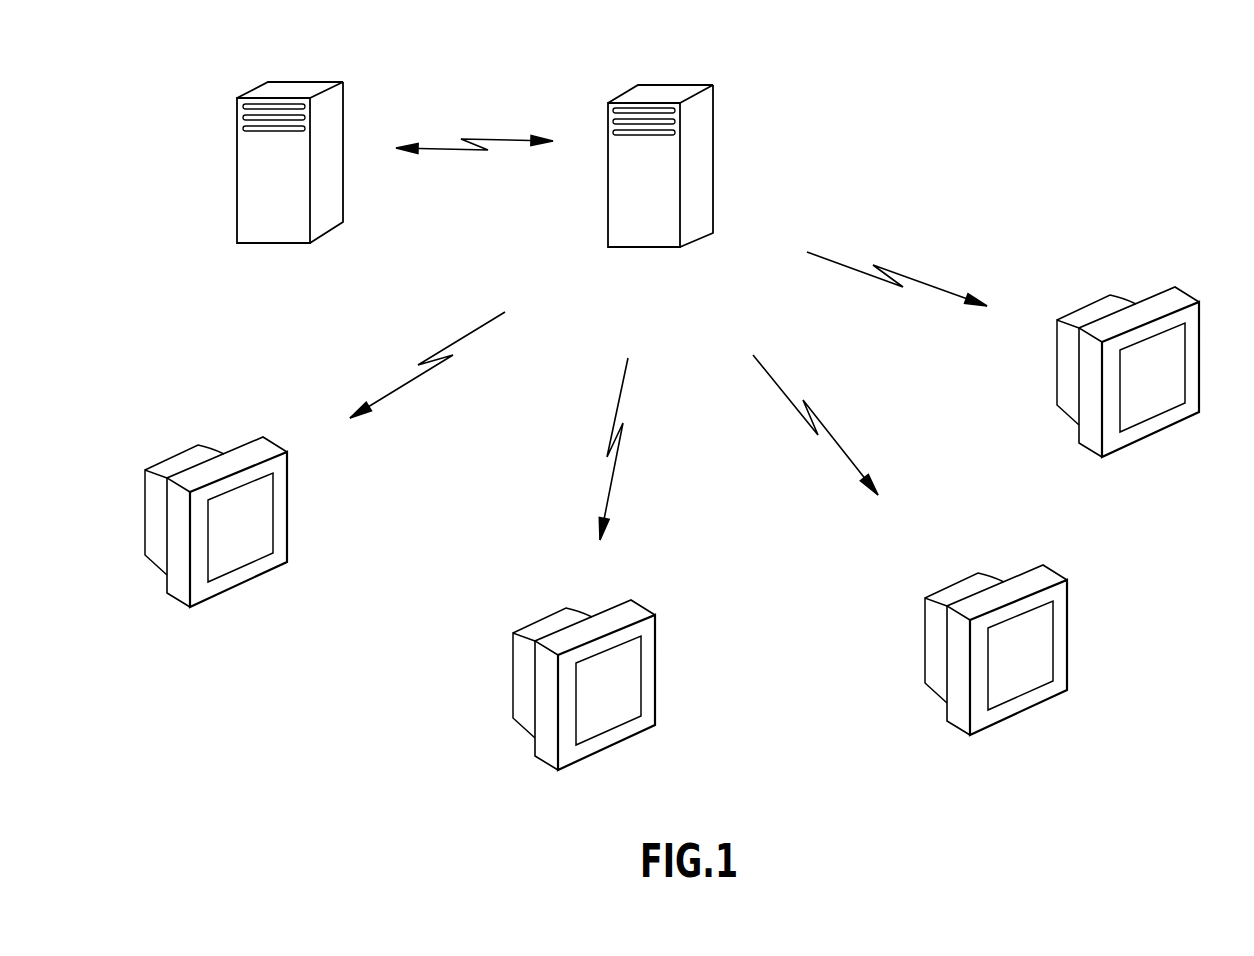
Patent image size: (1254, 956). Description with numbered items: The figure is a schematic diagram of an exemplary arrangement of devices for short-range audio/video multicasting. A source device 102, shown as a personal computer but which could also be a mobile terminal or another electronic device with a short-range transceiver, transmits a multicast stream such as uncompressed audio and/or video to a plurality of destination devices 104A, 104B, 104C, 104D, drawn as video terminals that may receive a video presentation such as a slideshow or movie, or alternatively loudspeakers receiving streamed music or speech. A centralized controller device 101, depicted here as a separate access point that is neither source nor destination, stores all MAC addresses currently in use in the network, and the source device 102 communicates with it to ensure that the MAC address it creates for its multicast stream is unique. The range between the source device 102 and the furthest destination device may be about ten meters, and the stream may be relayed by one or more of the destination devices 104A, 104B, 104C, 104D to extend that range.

The centralized controller device 101 is at (307, 133).
The source device 102 is at (667, 148).
The destination device 104A is at (226, 544).
The destination device 104B is at (596, 706).
The destination device 104C is at (1006, 670).
The destination device 104D is at (1137, 390).